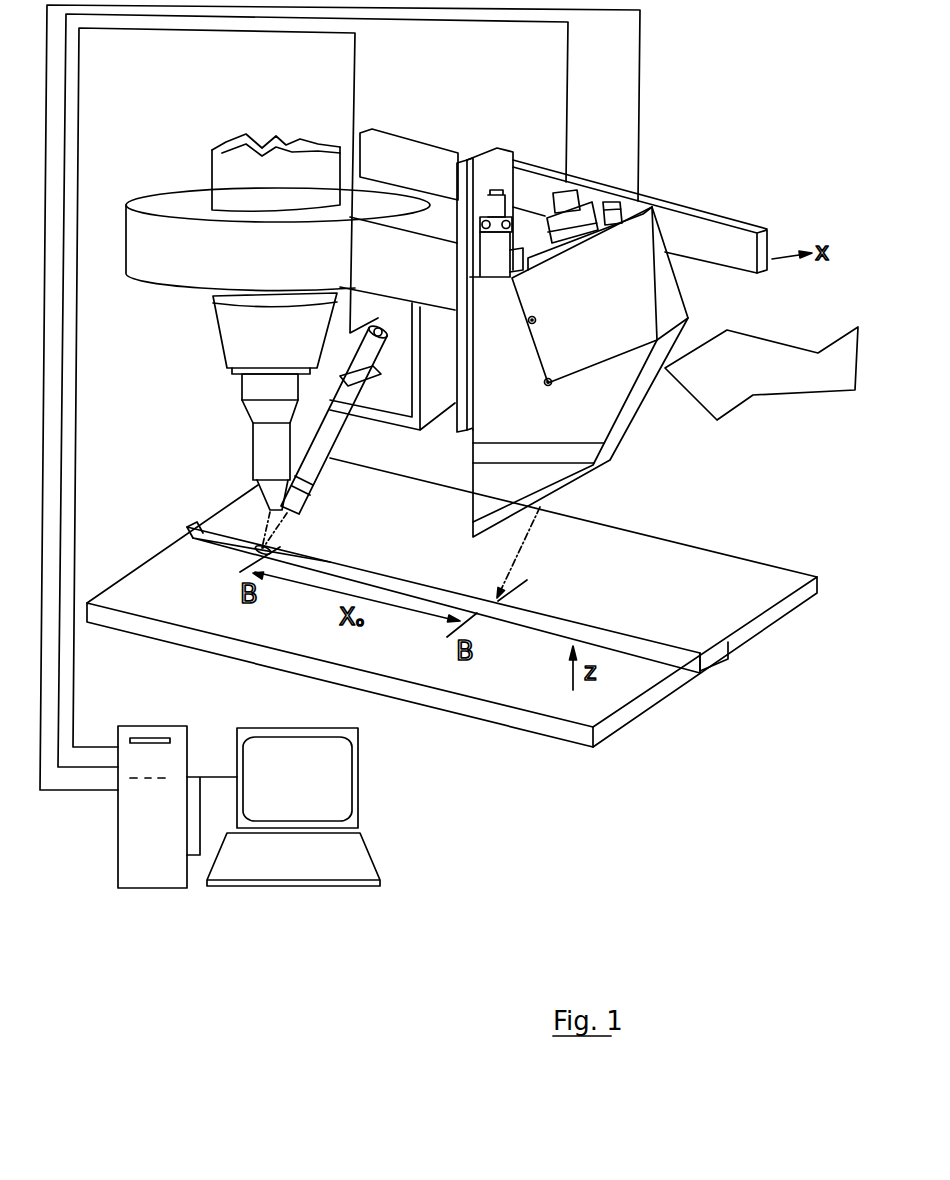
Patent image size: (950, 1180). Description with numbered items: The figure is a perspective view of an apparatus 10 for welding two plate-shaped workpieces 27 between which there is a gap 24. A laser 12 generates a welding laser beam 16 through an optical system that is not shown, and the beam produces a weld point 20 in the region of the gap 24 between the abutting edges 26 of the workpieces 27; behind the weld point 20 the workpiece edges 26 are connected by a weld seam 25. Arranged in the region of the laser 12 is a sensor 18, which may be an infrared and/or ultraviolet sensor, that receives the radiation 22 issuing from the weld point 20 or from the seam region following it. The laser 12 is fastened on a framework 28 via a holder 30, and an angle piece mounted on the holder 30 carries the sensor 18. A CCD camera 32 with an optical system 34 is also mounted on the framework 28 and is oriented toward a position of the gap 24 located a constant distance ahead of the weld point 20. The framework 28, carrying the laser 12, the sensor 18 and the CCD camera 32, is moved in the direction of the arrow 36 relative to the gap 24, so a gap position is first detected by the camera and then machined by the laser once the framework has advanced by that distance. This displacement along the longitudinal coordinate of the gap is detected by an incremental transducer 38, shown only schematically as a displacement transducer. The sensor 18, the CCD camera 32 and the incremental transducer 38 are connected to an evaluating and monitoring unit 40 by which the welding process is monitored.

The apparatus for welding two plate-shaped workpieces 10 is at (682, 73).
The laser 12 is at (237, 185).
The welding laser beam 16 is at (237, 487).
The sensor 18 is at (357, 345).
The weld point 20 is at (213, 560).
The radiation 22 is at (274, 547).
The gap 24 is at (531, 610).
The weld seam 25 is at (217, 530).
The abutting edges 26 is at (627, 647).
The plate-shaped workpieces 27 is at (727, 657).
The framework 28 is at (520, 167).
The holder 30 is at (390, 207).
The CCD camera 32 is at (613, 302).
The optical system 34 is at (593, 413).
The arrow 36 is at (788, 358).
The incremental transducer 38 is at (733, 220).
The evaluating and monitoring unit 40 is at (155, 908).